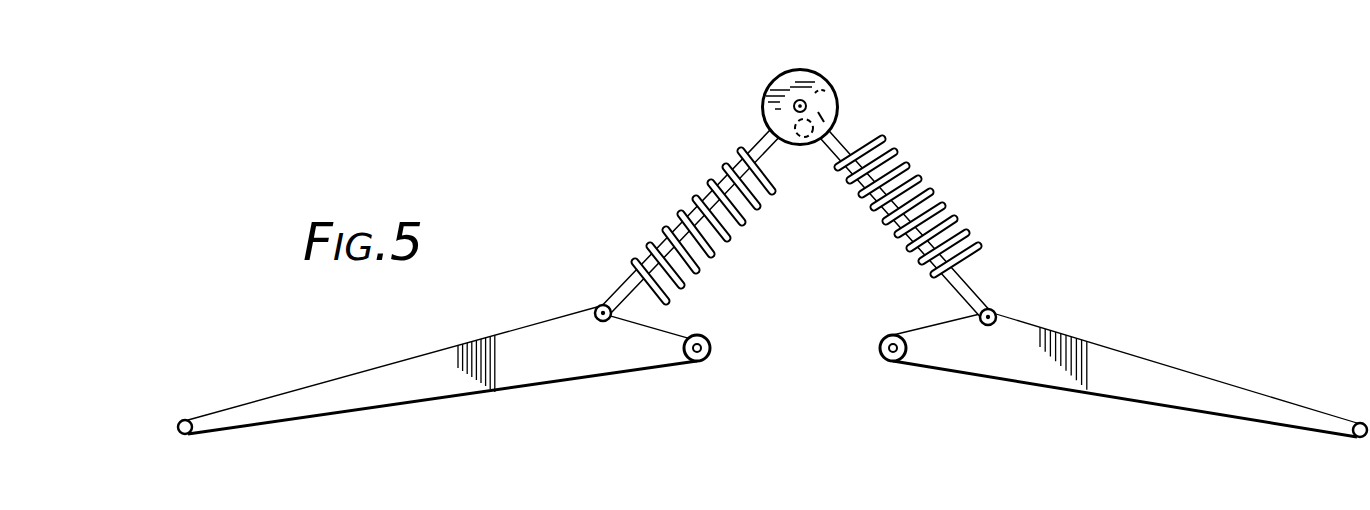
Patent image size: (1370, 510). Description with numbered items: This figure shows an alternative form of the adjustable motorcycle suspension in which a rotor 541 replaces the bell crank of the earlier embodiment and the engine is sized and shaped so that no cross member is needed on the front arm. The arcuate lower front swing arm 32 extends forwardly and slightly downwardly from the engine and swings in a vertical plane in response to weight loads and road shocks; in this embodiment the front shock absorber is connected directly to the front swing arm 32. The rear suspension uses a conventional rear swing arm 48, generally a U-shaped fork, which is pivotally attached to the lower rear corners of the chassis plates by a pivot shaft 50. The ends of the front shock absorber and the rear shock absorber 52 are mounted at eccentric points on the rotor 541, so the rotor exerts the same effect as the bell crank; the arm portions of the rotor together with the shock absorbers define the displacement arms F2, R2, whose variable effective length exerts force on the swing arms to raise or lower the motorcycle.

The lower front swing arm 32 is at (438, 360).
The rear swing arm 48 is at (1093, 356).
The pivot shaft 50 is at (666, 193).
The rear shock absorber 52 is at (937, 180).
The rotor 541 is at (822, 69).
The front displacement arm F2 is at (680, 182).
The rear displacement arm R2 is at (949, 216).